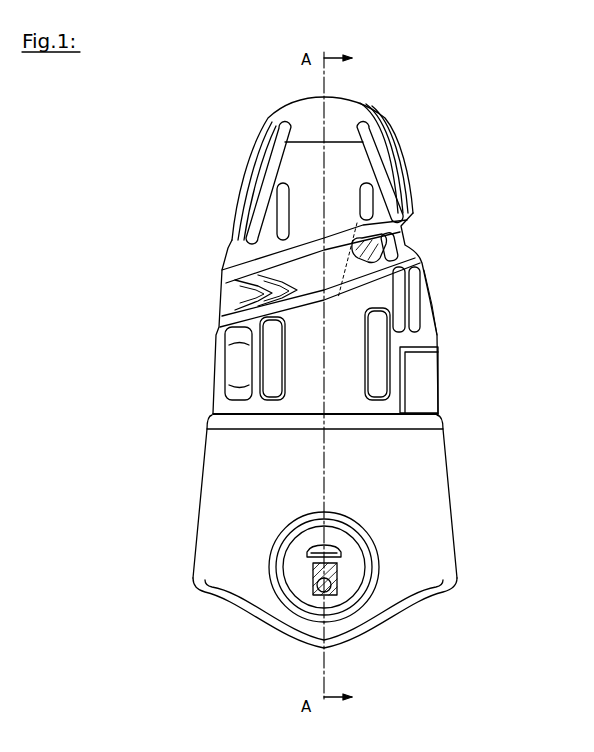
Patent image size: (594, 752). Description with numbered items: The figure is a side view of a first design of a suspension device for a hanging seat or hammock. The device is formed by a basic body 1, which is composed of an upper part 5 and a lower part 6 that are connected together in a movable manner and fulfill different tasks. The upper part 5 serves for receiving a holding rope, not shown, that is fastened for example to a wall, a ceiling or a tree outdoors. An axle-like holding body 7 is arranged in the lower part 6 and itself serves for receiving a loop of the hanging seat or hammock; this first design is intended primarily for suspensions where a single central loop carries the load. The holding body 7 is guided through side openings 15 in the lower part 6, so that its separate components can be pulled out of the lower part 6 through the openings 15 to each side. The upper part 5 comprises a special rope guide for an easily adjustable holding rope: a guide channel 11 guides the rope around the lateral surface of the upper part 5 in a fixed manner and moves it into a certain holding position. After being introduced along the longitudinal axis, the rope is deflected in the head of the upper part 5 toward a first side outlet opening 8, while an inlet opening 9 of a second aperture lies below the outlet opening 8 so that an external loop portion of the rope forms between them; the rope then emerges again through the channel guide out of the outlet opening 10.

The basic body 1 is at (329, 348).
The upper part 5 is at (442, 395).
The lower part 6 is at (445, 465).
The axle-like holding body 7 is at (352, 582).
The first side outlet opening 8 is at (417, 187).
The inlet opening 9 is at (437, 287).
The outlet opening 10 is at (220, 302).
The guide channel 11 is at (305, 275).
The side openings 15 is at (360, 522).